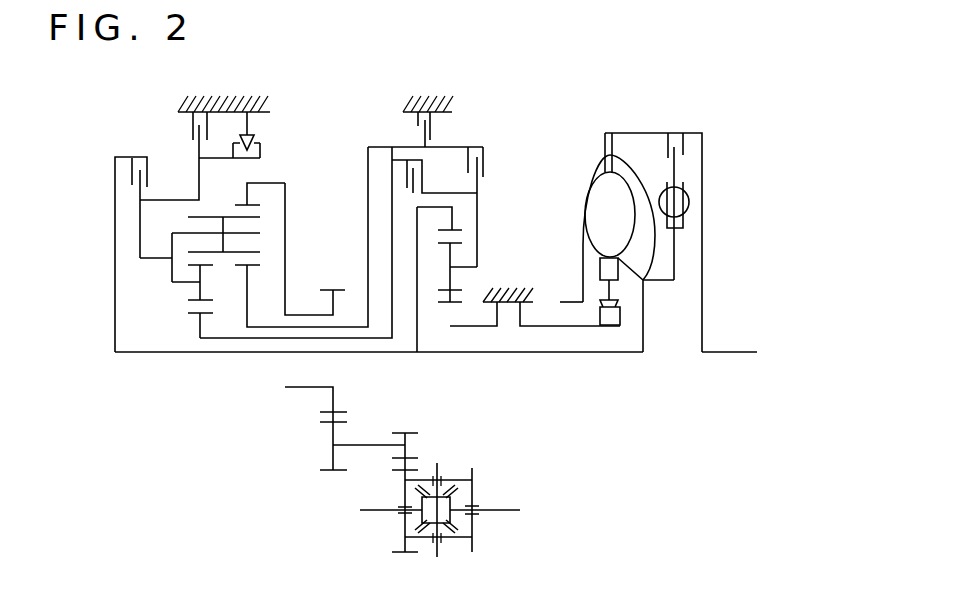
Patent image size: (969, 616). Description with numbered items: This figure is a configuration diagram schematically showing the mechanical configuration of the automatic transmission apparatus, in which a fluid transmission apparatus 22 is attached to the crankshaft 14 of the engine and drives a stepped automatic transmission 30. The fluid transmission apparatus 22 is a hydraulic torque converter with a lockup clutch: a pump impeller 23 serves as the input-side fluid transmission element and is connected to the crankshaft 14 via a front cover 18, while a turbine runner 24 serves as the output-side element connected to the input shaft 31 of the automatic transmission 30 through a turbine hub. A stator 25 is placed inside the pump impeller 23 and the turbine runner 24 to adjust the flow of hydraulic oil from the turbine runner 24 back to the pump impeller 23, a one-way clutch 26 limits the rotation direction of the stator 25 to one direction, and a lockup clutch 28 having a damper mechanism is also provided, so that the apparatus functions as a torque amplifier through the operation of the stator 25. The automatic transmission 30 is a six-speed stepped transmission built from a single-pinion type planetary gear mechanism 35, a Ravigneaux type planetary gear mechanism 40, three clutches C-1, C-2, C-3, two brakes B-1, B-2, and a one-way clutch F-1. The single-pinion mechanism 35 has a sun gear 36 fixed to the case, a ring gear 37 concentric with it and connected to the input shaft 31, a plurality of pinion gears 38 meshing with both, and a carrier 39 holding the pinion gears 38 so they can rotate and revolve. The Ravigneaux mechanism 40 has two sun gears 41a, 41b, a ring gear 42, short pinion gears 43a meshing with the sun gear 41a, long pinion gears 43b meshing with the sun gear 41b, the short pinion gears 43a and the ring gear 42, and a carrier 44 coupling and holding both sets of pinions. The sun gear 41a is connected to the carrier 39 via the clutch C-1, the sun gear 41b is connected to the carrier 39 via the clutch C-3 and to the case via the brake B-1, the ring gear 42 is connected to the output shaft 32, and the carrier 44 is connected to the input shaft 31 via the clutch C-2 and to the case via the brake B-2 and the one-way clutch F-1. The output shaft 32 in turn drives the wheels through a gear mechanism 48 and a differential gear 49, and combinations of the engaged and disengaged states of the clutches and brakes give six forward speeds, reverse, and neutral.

The crankshaft 14 is at (732, 355).
The front cover 18 is at (703, 212).
The fluid transmission apparatus 22 is at (606, 111).
The pump impeller 23 is at (588, 166).
The turbine runner 24 is at (620, 161).
The stator 25 is at (620, 283).
The one-way clutch 26 is at (621, 315).
The lockup clutch 28 is at (691, 145).
The automatic transmission 30 is at (542, 111).
The input shaft 31 is at (580, 353).
The output shaft 32 is at (303, 313).
The single-pinion type planetary gear mechanism 35 is at (504, 212).
The sun gear 36 is at (450, 310).
The ring gear 37 is at (457, 230).
The pinion gears 38 is at (455, 282).
The carrier 39 is at (460, 267).
The Ravigneaux type planetary gear mechanism 40 is at (160, 324).
The sun gear 41a is at (200, 325).
The sun gear 41b is at (247, 292).
The ring gear 42 is at (253, 203).
The short pinion gears 43a is at (198, 293).
The long pinion gears 43b is at (192, 217).
The carrier 44 is at (153, 258).
The gear mechanism 48 is at (359, 434).
The differential gear 49 is at (453, 456).
The brake B-1 is at (432, 132).
The brake B-2 is at (192, 133).
The clutch C-1 is at (392, 160).
The clutch C-2 is at (130, 157).
The clutch C-3 is at (483, 164).
The one-way clutch F-1 is at (260, 140).